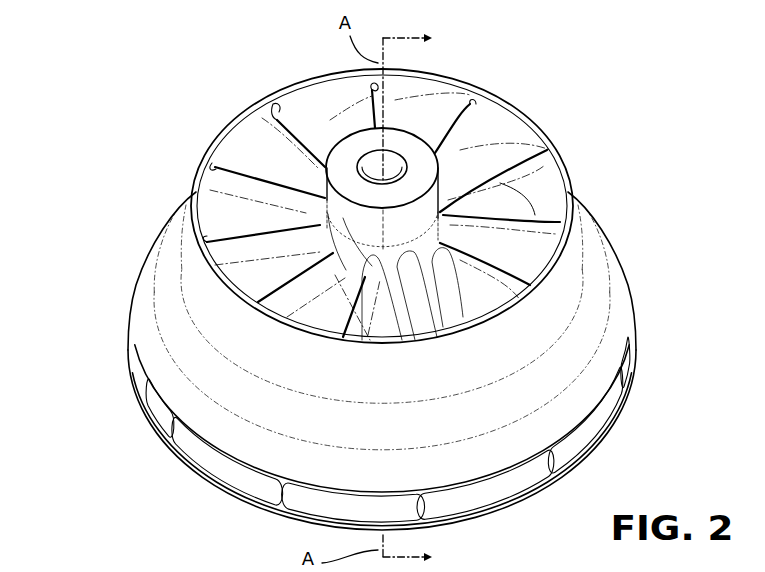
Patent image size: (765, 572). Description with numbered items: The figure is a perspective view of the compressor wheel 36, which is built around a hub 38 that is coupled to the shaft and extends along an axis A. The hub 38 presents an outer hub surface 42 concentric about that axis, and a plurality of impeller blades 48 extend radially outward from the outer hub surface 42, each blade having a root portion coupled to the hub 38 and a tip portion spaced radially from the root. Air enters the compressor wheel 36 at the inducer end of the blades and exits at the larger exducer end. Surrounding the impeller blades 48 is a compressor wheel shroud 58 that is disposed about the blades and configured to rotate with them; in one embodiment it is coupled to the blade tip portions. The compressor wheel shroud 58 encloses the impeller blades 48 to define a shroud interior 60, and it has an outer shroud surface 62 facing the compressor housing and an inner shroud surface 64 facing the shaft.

The compressor wheel 36 is at (69, 133).
The hub 38 is at (403, 148).
The outer hub surface 42 is at (413, 209).
The impeller blades 48 is at (276, 147).
The compressor wheel shroud 58 is at (168, 312).
The shroud interior 60 is at (220, 157).
The outer shroud surface 62 is at (172, 333).
The inner shroud surface 64 is at (232, 139).